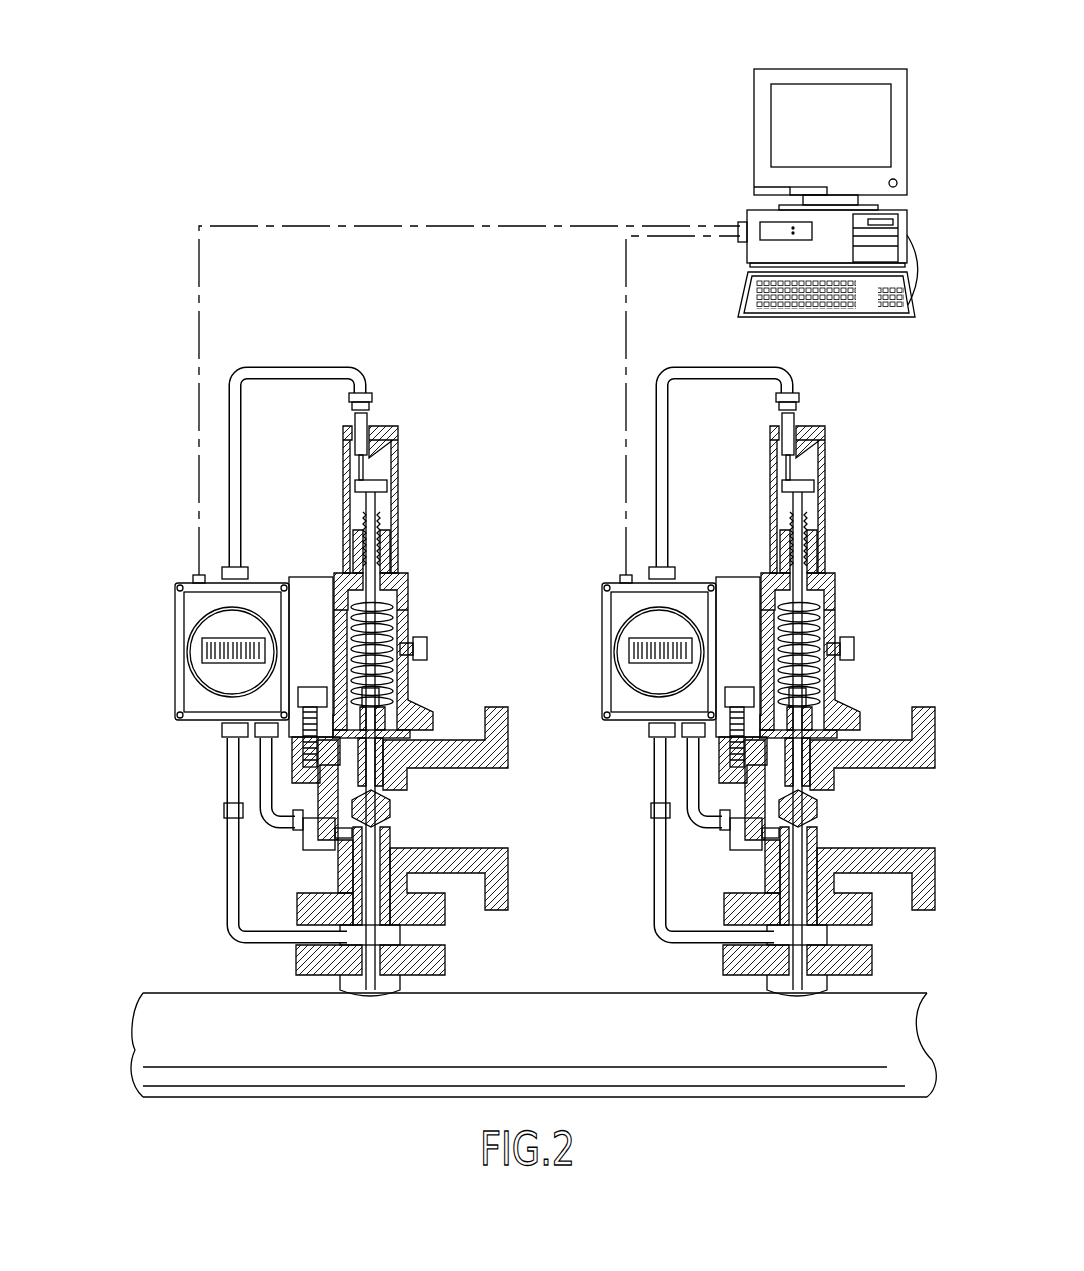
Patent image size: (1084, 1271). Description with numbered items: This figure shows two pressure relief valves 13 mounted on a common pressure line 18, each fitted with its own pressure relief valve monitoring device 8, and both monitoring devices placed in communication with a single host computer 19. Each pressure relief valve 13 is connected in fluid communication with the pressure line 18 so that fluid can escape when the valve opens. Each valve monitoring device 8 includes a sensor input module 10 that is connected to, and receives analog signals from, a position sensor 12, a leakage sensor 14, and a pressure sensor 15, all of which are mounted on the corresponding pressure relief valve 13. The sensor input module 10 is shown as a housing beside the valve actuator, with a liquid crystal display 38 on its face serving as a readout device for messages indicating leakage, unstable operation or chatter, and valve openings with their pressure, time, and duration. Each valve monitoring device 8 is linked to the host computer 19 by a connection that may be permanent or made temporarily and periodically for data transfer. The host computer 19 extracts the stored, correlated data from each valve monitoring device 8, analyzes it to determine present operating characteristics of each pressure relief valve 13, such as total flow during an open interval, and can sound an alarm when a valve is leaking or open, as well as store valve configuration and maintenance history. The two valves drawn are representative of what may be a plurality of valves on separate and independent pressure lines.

The pressure relief valve monitoring device 8 is at (173, 549).
The sensor input module 10 is at (173, 613).
The position sensor 12 is at (366, 422).
The pressure relief valve 13 is at (411, 604).
The leakage sensor 14 is at (295, 832).
The pressure sensor 15 is at (240, 844).
The pressure line 18 is at (548, 1045).
The host computer 19 is at (840, 64).
The liquid crystal display 38 is at (231, 674).